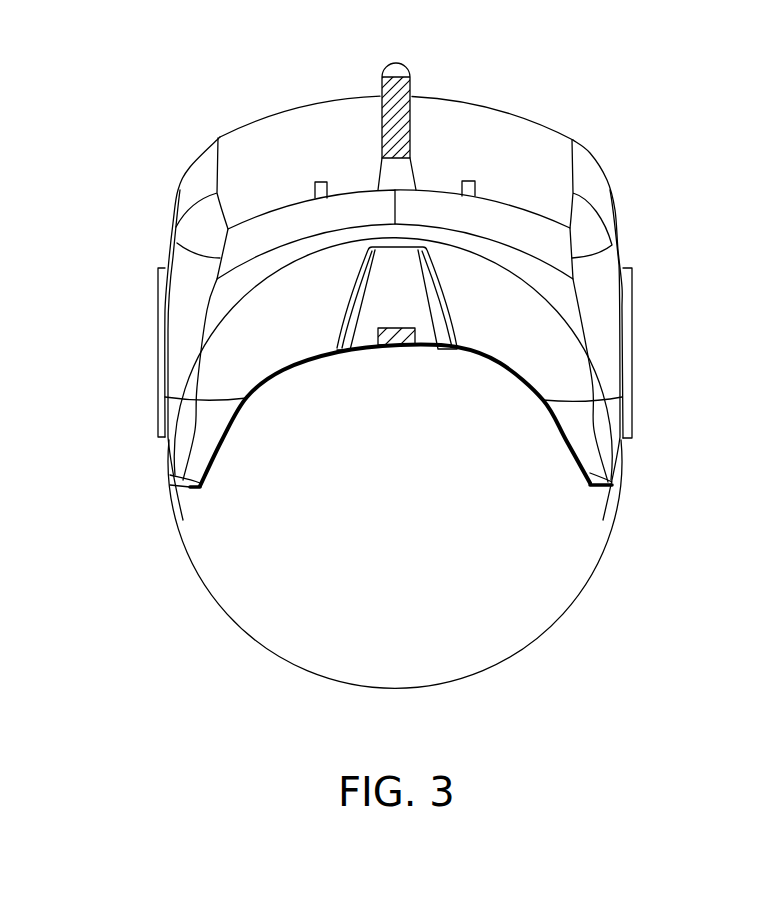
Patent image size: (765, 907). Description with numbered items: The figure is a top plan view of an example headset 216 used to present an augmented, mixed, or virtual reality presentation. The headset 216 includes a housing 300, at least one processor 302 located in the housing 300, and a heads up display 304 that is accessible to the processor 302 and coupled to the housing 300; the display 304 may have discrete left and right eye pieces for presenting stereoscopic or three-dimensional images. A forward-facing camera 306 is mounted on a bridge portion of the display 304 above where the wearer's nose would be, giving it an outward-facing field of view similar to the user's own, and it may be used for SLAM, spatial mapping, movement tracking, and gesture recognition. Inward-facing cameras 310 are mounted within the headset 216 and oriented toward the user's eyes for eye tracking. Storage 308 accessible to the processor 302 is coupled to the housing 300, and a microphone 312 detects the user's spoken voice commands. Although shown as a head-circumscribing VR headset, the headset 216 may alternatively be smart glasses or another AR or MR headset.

The headset 216 is at (153, 44).
The housing 300 is at (600, 553).
The processor 302 is at (278, 247).
The heads up display 304 is at (293, 107).
The forward-facing camera 306 is at (410, 66).
The storage 308 is at (490, 243).
The inward-facing cameras 310 is at (317, 181).
The microphone 312 is at (400, 347).